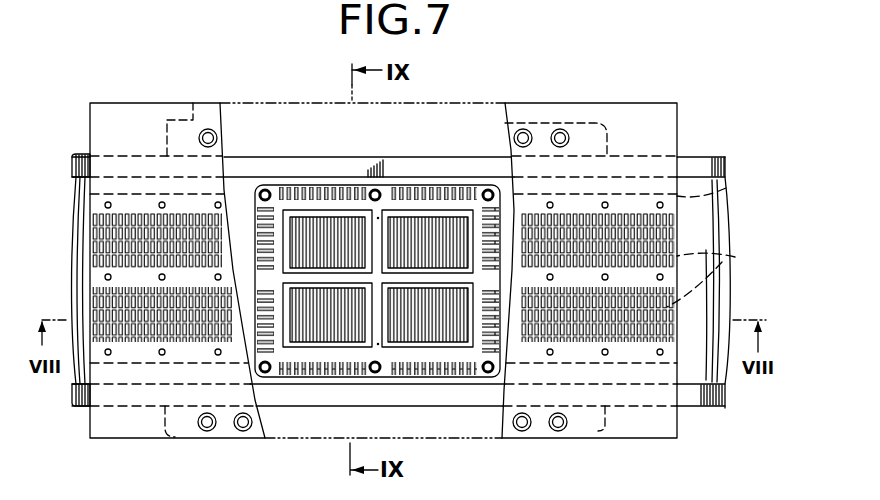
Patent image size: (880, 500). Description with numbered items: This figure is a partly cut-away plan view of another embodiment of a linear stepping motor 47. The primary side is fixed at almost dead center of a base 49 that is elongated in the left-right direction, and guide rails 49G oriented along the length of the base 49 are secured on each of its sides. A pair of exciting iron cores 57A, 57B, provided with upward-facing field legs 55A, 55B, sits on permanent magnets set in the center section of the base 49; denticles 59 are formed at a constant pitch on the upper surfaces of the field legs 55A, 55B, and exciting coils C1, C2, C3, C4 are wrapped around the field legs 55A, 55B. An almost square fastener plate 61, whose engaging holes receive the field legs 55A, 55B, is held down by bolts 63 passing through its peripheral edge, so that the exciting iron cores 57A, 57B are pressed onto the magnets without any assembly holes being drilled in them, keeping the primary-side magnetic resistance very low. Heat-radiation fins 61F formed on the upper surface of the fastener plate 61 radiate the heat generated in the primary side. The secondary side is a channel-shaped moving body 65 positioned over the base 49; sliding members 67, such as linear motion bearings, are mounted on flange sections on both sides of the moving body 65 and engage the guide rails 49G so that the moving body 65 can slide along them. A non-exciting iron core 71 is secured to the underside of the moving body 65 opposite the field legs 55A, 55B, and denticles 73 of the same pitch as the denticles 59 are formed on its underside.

The linear stepping motor 47 is at (683, 103).
The base 49 is at (697, 362).
The guide rails 49G is at (703, 163).
The field legs 55A is at (474, 243).
The field legs 55B is at (286, 229).
The exciting iron core 57A is at (378, 350).
The exciting iron core 57B is at (383, 213).
The denticles 59 is at (308, 227).
The fastener plate 61 is at (310, 384).
The heat-radiation fins 61F is at (359, 186).
The bolts 63 is at (265, 189).
The moving body 65 is at (645, 118).
The sliding members 67 is at (193, 103).
The non-exciting iron core 71 is at (726, 188).
The denticles 73 is at (735, 257).
The exciting coil C1 is at (298, 348).
The exciting coil C2 is at (470, 348).
The exciting coil C3 is at (337, 212).
The exciting coil C4 is at (448, 213).